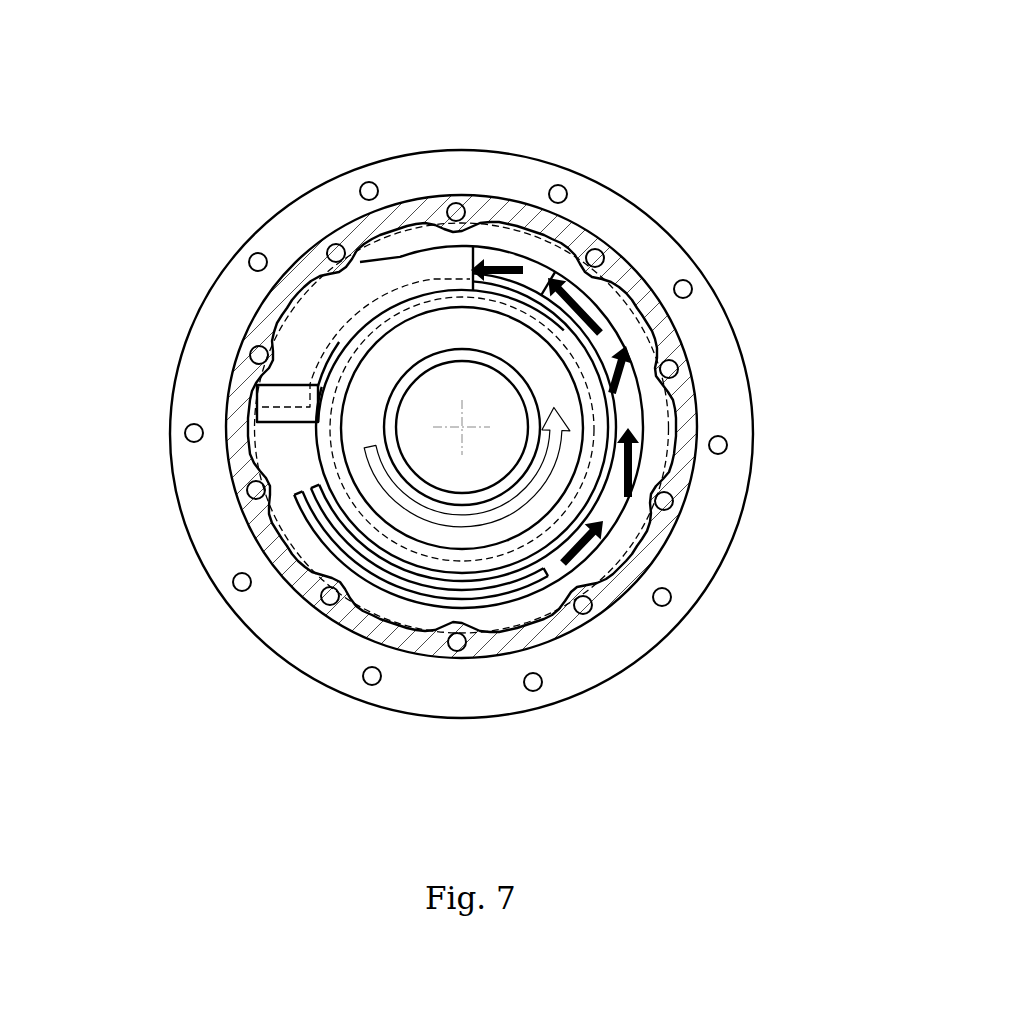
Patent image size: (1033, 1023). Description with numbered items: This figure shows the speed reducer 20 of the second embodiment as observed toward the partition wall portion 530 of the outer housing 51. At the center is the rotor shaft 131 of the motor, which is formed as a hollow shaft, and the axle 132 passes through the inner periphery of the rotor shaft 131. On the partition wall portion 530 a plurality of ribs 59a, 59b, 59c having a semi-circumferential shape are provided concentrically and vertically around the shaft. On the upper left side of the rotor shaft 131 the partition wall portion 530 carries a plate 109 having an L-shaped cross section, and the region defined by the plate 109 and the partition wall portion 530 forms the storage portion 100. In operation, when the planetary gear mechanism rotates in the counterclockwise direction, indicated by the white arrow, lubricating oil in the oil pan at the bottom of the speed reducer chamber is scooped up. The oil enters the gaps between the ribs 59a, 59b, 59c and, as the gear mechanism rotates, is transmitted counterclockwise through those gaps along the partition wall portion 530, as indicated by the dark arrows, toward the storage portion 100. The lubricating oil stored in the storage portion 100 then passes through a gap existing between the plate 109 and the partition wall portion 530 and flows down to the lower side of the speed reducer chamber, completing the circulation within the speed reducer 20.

The speed reducer 20 is at (468, 167).
The outer housing 51 is at (620, 197).
The partition wall portion 530 is at (628, 318).
The storage portion 100 is at (306, 329).
The plate 109 is at (300, 386).
The rotor shaft 131 is at (385, 433).
The axle 132 is at (420, 432).
The rib 59a is at (606, 420).
The rib 59b is at (622, 437).
The rib 59c is at (625, 500).